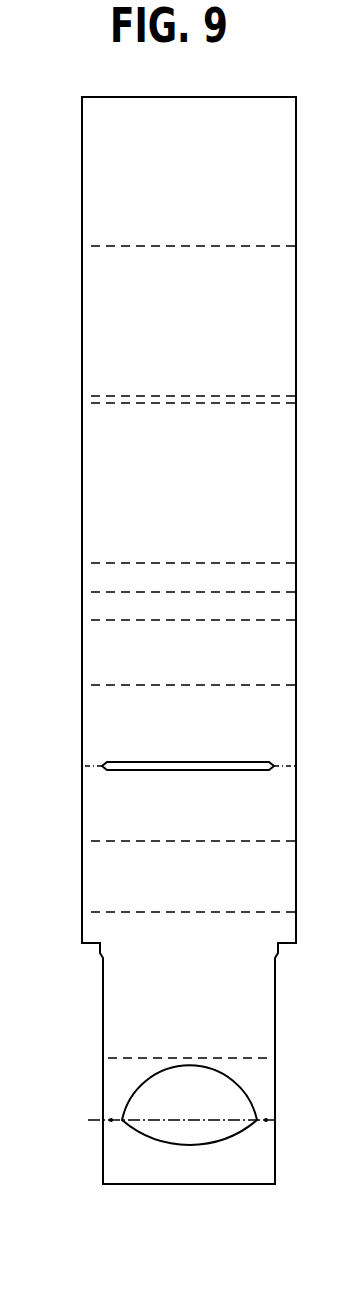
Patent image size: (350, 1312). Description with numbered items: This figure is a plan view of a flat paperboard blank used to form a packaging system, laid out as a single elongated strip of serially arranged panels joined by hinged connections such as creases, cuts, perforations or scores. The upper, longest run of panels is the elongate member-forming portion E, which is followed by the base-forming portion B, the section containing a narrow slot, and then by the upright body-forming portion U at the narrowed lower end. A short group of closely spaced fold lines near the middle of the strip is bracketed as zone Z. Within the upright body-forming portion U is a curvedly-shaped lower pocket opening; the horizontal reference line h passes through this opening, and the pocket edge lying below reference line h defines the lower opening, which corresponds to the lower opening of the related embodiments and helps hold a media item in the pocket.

The elongate member-forming portion E is at (71, 97).
The base-forming portion B is at (71, 592).
The upright body-forming portion U is at (71, 913).
The fold-line zone Z is at (313, 563).
The horizontal reference line h is at (275, 1120).